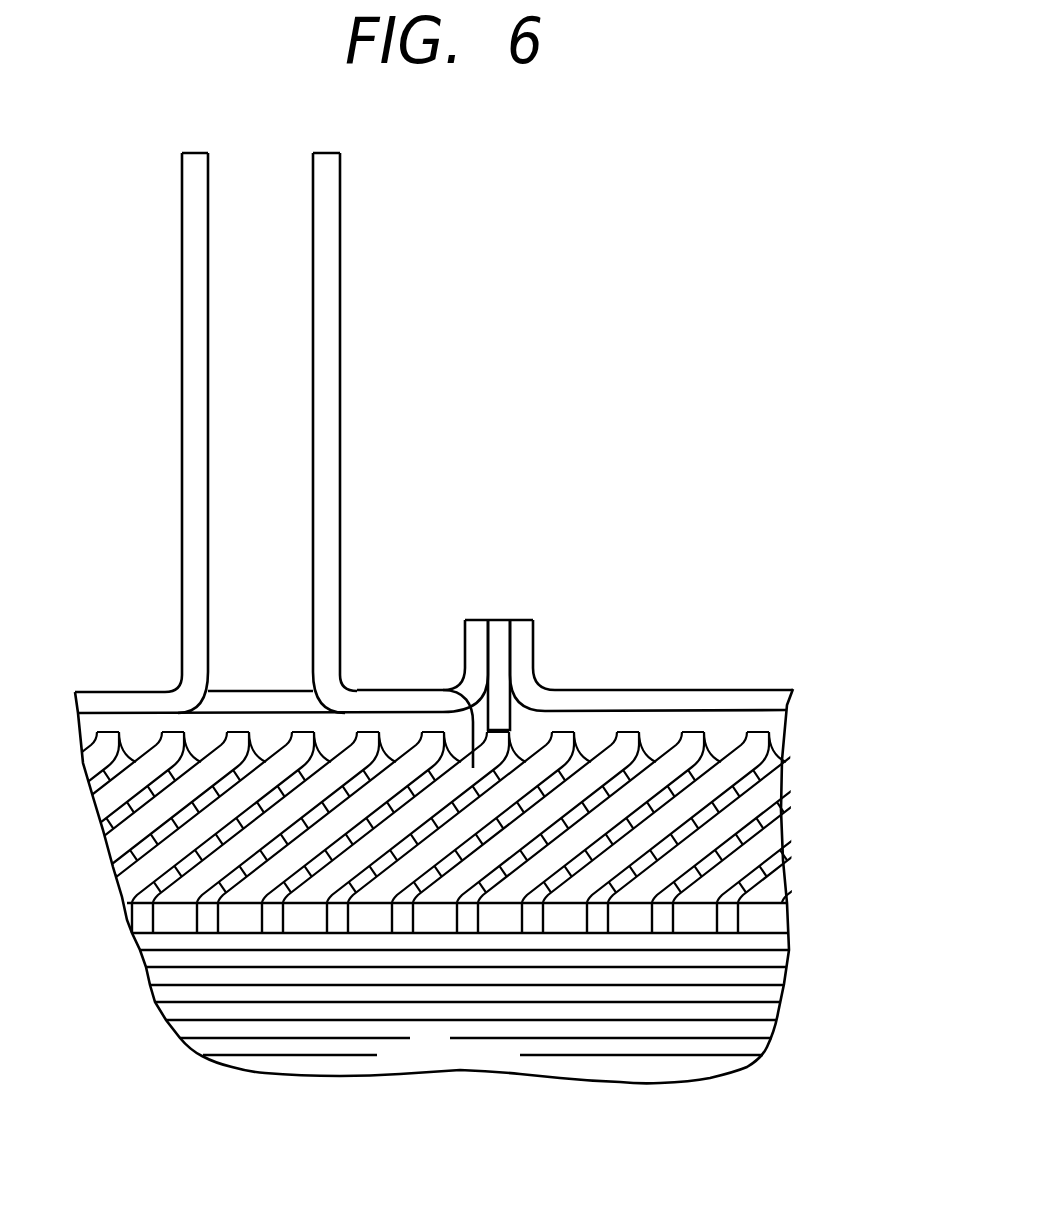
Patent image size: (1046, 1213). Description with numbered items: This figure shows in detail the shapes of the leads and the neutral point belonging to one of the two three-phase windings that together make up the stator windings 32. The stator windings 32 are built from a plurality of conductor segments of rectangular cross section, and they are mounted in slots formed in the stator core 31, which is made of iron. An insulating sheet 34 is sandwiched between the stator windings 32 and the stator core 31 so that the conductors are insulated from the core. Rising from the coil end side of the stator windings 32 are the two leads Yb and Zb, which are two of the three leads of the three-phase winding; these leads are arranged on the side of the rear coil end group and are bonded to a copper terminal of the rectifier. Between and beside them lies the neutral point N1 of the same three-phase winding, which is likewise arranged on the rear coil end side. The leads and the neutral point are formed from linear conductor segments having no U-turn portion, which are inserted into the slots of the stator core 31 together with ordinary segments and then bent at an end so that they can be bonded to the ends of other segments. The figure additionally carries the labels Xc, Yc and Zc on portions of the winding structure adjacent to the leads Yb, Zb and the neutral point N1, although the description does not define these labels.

The stator windings 32 is at (828, 656).
The stator core 31 is at (745, 1047).
The insulating sheet 34 is at (765, 916).
The horizontal lead electrode Xc is at (585, 690).
The lead Zb is at (197, 223).
The lead Yb is at (326, 211).
The lead electrode Zc is at (476, 620).
The lead electrode Yc is at (502, 618).
The neutral point N1 is at (490, 578).